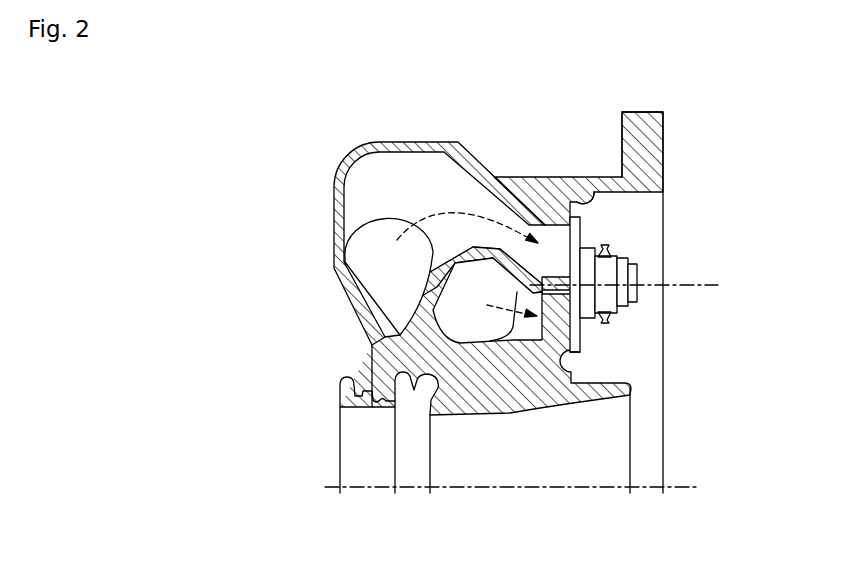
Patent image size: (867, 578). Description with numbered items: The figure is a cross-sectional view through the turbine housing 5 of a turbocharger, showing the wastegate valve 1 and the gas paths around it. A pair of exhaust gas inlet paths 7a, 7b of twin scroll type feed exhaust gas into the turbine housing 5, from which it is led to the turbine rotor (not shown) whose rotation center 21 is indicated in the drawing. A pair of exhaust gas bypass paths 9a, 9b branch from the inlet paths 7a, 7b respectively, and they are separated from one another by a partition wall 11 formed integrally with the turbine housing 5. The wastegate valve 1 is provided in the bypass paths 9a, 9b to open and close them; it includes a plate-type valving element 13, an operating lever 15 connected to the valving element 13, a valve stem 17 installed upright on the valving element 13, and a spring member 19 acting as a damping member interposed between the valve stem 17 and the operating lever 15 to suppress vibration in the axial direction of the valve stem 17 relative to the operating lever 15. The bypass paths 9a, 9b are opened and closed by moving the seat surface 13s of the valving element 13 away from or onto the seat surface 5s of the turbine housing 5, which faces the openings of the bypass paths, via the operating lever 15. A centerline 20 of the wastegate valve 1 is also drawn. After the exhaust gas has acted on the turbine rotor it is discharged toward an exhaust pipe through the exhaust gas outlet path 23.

The wastegate valve 1 is at (612, 218).
The turbine housing 5 is at (403, 142).
The seat surface of the turbine housing 5s is at (586, 190).
The exhaust gas inlet path 7a is at (363, 262).
The exhaust gas inlet path 7b is at (447, 322).
The exhaust gas bypass path 9a is at (538, 236).
The exhaust gas bypass path 9b is at (550, 332).
The partition wall 11 is at (542, 292).
The valving element 13 is at (580, 337).
The seat surface of the valving element 13s is at (562, 368).
The operating lever 15 is at (592, 247).
The valve stem 17 is at (608, 277).
The spring member 19 is at (609, 314).
The centerline of the wastegate valve 20 is at (641, 291).
The rotation center of the turbine rotor 21 is at (463, 488).
The exhaust gas outlet path 23 is at (643, 347).